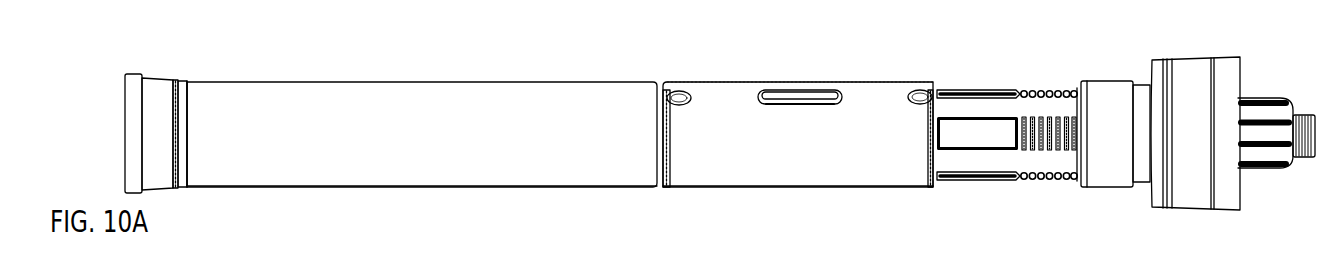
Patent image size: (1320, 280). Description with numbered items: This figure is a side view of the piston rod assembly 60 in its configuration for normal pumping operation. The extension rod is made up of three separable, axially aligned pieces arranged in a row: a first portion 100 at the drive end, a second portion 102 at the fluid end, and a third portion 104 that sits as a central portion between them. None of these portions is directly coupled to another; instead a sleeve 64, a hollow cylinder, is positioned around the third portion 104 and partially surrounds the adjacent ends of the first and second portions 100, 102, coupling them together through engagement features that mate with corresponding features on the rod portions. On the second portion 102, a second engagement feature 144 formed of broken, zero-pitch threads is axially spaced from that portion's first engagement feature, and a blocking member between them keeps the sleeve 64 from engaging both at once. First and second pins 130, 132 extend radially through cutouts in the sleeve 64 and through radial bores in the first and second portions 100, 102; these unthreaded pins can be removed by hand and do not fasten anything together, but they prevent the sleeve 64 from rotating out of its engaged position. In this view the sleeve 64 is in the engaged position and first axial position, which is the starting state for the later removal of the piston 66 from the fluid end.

The drug delivery device 60 is at (86, 116).
The first portion 100 is at (262, 92).
The first pin 130 is at (680, 90).
The sleeve 64 is at (878, 98).
The third portion 104 is at (800, 97).
The second pin 132 is at (923, 91).
The second portion 102 is at (1000, 107).
The second engagement feature 144 is at (1047, 150).
The piston 66 is at (1228, 75).